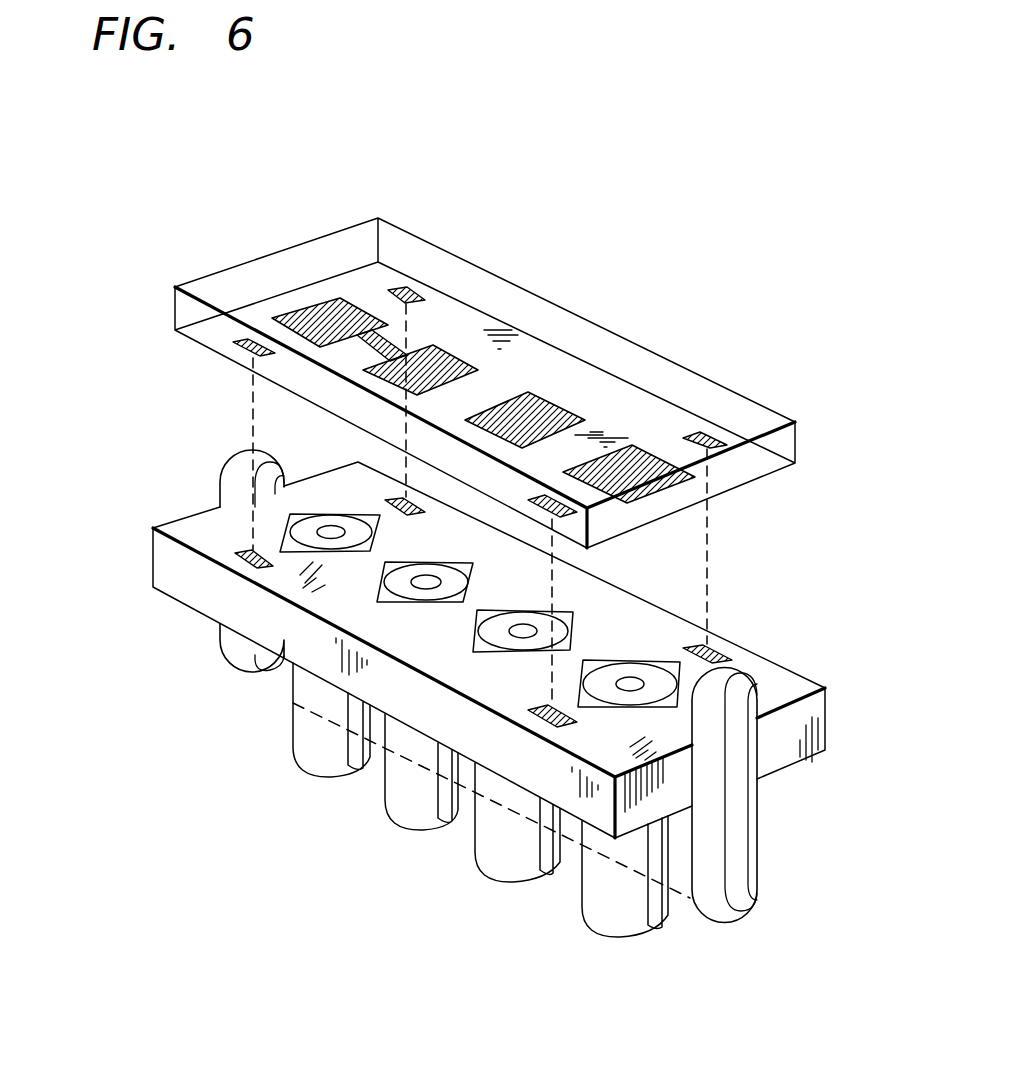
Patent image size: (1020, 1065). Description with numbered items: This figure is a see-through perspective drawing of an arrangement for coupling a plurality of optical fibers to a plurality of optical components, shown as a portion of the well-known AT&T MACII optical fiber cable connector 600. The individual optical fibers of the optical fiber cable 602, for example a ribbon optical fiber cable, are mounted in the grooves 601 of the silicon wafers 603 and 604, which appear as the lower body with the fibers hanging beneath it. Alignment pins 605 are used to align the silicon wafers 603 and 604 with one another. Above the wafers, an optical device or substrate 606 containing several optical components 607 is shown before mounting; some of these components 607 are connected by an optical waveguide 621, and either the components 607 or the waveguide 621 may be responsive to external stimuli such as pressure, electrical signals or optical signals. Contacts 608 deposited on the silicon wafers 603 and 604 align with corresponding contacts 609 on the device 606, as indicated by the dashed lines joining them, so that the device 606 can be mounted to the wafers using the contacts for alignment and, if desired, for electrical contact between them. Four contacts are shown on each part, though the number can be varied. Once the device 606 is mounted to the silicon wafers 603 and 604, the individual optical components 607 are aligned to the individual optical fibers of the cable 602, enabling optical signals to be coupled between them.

The optical fiber cable connector 600 is at (363, 115).
The grooves 601 is at (283, 542).
The optical fiber cable 602 is at (285, 699).
The silicon wafer 603 is at (650, 813).
The silicon wafer 604 is at (800, 750).
The alignment pins 605 is at (218, 648).
The optical device 606 is at (568, 324).
The optical components 607 is at (318, 306).
The contacts 608 is at (393, 503).
The contacts 609 is at (405, 290).
The optical waveguide 621 is at (398, 348).